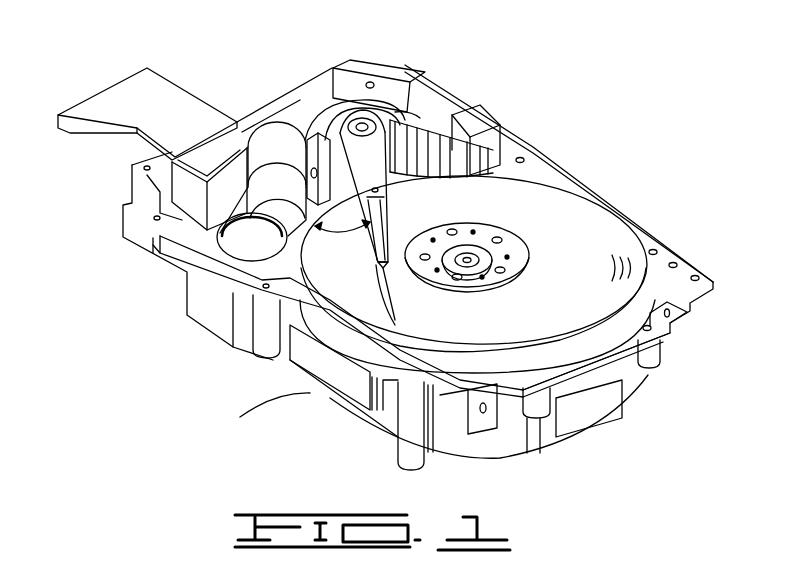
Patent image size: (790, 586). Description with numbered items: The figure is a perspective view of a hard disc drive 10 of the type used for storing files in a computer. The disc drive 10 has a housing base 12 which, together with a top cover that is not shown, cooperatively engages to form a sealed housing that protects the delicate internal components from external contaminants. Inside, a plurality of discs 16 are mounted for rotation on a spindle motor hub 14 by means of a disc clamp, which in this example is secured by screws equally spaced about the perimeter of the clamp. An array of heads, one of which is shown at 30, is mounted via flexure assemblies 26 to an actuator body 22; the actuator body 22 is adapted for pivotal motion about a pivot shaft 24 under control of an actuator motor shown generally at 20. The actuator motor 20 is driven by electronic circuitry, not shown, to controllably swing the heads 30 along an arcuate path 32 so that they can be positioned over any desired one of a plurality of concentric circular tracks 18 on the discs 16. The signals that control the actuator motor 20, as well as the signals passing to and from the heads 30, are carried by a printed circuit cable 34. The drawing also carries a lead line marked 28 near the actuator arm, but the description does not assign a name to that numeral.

The hard disc drive 10 is at (118, 63).
The housing base 12 is at (305, 392).
The spindle motor hub 14 is at (485, 258).
The discs 16 is at (545, 200).
The concentric circular tracks 18 is at (628, 265).
The actuator motor 20 is at (420, 60).
The actuator body 22 is at (382, 175).
The pivot shaft 24 is at (415, 118).
The flexure assemblies 26 is at (395, 225).
The suspension 28 is at (375, 265).
The heads 30 is at (393, 270).
The arcuate path 32 is at (350, 240).
The printed circuit cable 34 is at (270, 138).